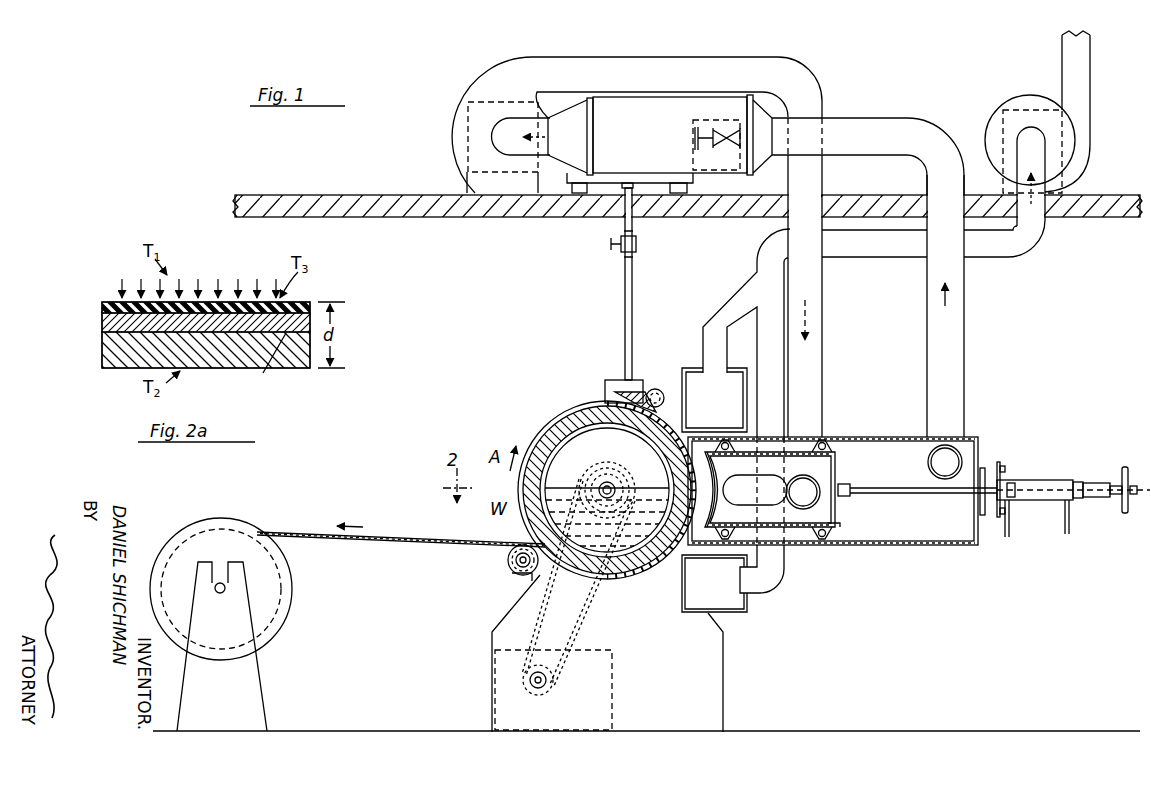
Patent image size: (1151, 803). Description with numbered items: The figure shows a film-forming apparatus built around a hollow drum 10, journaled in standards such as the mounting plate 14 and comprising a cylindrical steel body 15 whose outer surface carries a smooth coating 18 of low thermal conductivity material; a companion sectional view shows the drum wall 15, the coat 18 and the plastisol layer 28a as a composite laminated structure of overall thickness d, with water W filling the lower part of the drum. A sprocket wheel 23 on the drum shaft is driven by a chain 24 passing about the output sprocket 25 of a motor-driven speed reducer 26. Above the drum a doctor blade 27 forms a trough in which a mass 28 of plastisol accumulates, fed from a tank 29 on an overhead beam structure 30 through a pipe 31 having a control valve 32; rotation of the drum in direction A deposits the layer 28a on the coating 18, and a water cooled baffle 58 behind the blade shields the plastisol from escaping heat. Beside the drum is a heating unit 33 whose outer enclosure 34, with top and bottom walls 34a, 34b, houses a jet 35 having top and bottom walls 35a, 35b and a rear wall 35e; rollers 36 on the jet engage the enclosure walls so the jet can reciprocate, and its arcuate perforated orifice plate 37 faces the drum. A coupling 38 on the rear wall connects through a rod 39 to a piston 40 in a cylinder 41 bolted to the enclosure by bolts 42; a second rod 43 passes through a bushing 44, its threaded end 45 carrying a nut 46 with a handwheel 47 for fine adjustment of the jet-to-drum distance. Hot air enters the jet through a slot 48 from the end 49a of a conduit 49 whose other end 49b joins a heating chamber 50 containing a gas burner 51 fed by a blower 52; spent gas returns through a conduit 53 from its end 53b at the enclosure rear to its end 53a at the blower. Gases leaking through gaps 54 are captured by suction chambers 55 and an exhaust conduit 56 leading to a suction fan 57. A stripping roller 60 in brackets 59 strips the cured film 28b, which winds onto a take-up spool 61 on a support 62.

In FIG. 1, the drum 10 is at (542, 416).
In FIG. 1, the mounting plate 14 is at (724, 688).
In FIG. 1, the cylindrical steel body 15 is at (583, 422).
In FIG. 2a, the cylindrical steel body 15 is at (102, 356).
In FIG. 1, the coating 18 is at (580, 404).
In FIG. 2a, the coating 18 is at (102, 325).
In FIG. 1, the sprocket wheel 23 is at (622, 476).
In FIG. 1, the drive chain 24 is at (595, 600).
In FIG. 1, the output sprocket 25 is at (547, 690).
In FIG. 1, the motor-driven speed reducer 26 is at (613, 673).
In FIG. 1, the doctor blade 27 is at (640, 380).
In FIG. 1, the mass of plastisol 28 is at (622, 393).
In FIG. 1, the plastisol layer 28a is at (662, 428).
In FIG. 2a, the plastisol layer 28a is at (102, 309).
In FIG. 1, the cured film 28b is at (361, 538).
In FIG. 1, the tank 29 is at (590, 188).
In FIG. 1, the overhead beam structure 30 is at (676, 218).
In FIG. 1, the pipe 31 is at (624, 306).
In FIG. 1, the control valve 32 is at (637, 252).
In FIG. 1, the heating unit 33 is at (878, 548).
In FIG. 1, the outer enclosure 34 is at (980, 549).
In FIG. 1, the top wall 34a is at (904, 437).
In FIG. 1, the bottom wall 34b is at (946, 547).
In FIG. 1, the jet 35 is at (838, 462).
In FIG. 1, the top wall 35a is at (807, 440).
In FIG. 1, the bottom wall 35b is at (797, 531).
In FIG. 1, the rear wall 35e is at (837, 500).
In FIG. 1, the rollers 36 is at (829, 444).
In FIG. 1, the perforated orifice plate 37 is at (713, 462).
In FIG. 1, the coupling 38 is at (853, 488).
In FIG. 1, the rod 39 is at (917, 492).
In FIG. 1, the piston 40 is at (1012, 482).
In FIG. 1, the cylinder 41 is at (1022, 500).
In FIG. 1, the bolts 42 is at (983, 468).
In FIG. 1, the rod 43 is at (1048, 483).
In FIG. 1, the bushing 44 is at (1090, 500).
In FIG. 1, the threaded end 45 is at (1132, 496).
In FIG. 1, the nut 46 is at (1116, 483).
In FIG. 1, the handwheel 47 is at (1125, 466).
In FIG. 1, the slot 48 is at (760, 476).
In FIG. 1, the conduit 49 is at (822, 349).
In FIG. 1, the conduit end 49a is at (835, 525).
In FIG. 1, the conduit end 49b is at (749, 61).
In FIG. 1, the heating chamber 50 is at (651, 103).
In FIG. 1, the gas burner 51 is at (722, 126).
In FIG. 1, the blower 52 is at (452, 137).
In FIG. 1, the conduit 53 is at (964, 349).
In FIG. 1, the conduit end 53a is at (935, 112).
In FIG. 1, the conduit end 53b is at (966, 436).
In FIG. 1, the gaps 54 is at (702, 428).
In FIG. 1, the suction chambers 55 is at (693, 382).
In FIG. 1, the exhaust conduit 56 is at (858, 258).
In FIG. 1, the suction fan 57 is at (1011, 110).
In FIG. 1, the water cooled baffle 58 is at (662, 391).
In FIG. 1, the brackets 59 is at (511, 582).
In FIG. 1, the stripping roller 60 is at (508, 562).
In FIG. 1, the take-up spool 61 is at (282, 615).
In FIG. 1, the support 62 is at (252, 682).